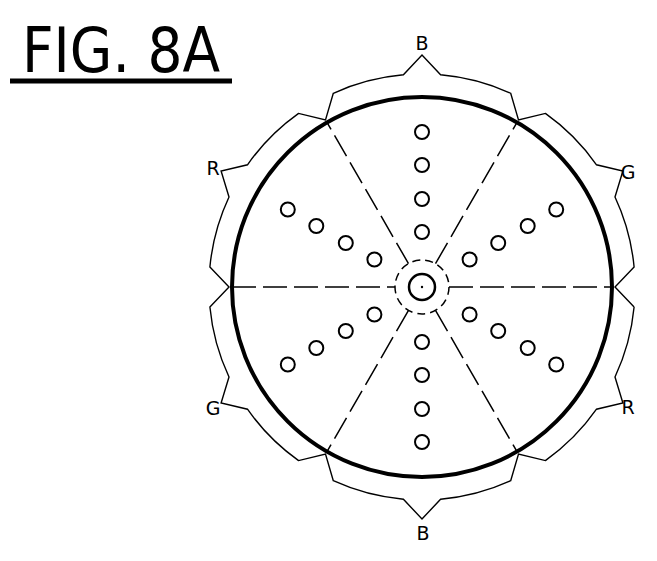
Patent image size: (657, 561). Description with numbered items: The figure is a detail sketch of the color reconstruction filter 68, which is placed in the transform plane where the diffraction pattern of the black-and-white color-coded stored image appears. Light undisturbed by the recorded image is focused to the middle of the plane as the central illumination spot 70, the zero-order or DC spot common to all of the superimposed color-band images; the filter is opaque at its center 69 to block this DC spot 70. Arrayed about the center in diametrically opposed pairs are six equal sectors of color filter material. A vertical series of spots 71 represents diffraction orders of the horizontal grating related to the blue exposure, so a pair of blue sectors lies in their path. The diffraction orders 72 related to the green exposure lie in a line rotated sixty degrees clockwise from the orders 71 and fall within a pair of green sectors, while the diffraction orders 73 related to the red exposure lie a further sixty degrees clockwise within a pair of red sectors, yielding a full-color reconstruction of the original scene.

The color reconstruction filter 68 is at (253, 333).
The center 69 is at (438, 283).
The central illumination spot 70 is at (428, 291).
The vertical series of spots 71 is at (428, 160).
The diffraction orders 72 is at (550, 206).
The diffraction orders 73 is at (339, 244).